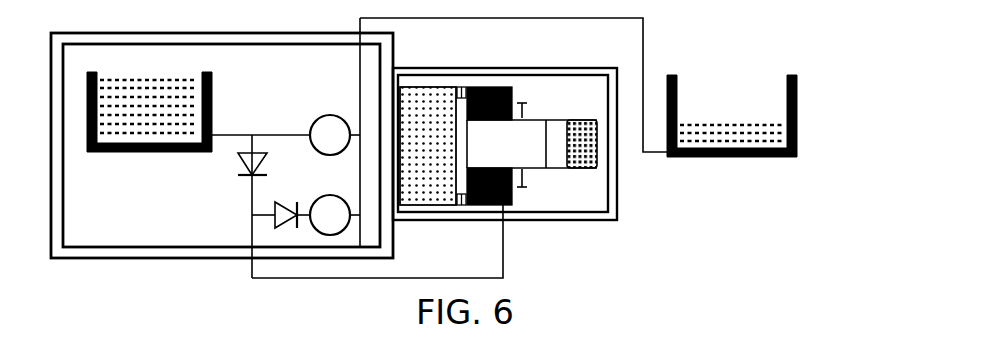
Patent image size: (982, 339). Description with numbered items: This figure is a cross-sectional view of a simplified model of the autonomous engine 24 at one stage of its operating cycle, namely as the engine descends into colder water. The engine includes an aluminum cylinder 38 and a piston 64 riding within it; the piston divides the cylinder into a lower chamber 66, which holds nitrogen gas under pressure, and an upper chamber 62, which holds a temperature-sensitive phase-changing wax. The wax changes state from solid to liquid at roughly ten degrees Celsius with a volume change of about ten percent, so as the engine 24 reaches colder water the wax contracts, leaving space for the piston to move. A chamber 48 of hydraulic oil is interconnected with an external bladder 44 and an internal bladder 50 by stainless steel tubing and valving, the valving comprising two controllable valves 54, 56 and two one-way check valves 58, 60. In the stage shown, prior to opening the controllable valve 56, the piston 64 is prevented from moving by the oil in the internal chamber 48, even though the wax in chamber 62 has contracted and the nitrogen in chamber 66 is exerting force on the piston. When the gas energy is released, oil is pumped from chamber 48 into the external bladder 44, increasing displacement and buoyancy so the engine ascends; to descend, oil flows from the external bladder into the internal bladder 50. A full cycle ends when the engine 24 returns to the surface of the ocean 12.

The ocean 12 is at (312, 27).
The internal bladder 50 is at (122, 145).
The one-way check valve 58 is at (240, 166).
The one-way check valve 60 is at (285, 209).
The controllable valve 54 is at (330, 135).
The controllable valve 56 is at (330, 215).
The aluminum cylinder 38 is at (617, 212).
The lower chamber 66 is at (422, 90).
The chamber 48 is at (500, 87).
The piston 64 is at (485, 158).
The upper chamber 62 is at (566, 121).
The autonomous engine 24 is at (459, 165).
The external bladder 44 is at (787, 130).